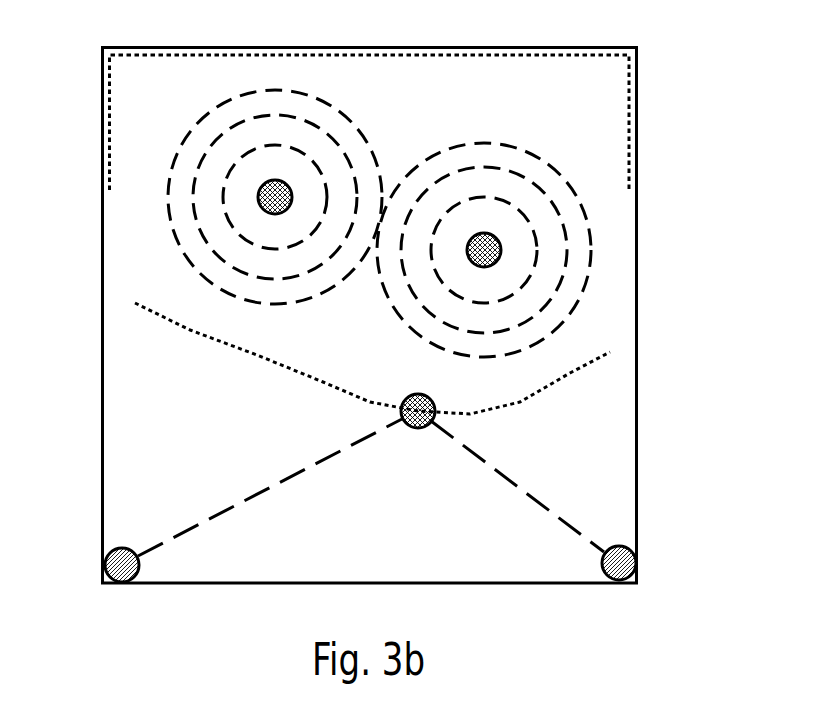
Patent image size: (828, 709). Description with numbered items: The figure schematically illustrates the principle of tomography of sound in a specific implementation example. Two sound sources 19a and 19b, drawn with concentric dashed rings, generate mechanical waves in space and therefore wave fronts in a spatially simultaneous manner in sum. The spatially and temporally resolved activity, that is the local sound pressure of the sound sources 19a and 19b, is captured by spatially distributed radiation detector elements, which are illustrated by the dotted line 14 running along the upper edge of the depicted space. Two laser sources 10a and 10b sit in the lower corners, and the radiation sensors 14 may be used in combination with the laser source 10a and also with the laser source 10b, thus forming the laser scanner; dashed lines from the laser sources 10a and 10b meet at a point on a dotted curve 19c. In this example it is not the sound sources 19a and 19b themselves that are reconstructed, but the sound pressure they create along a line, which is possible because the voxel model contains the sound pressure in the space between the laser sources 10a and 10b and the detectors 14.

The radiation detector elements 14 is at (630, 107).
The sound source 19a is at (257, 196).
The sound source 19b is at (502, 249).
The third transmitter field (curved) 19c is at (552, 388).
The laser source 10a is at (112, 551).
The laser source 10b is at (625, 547).